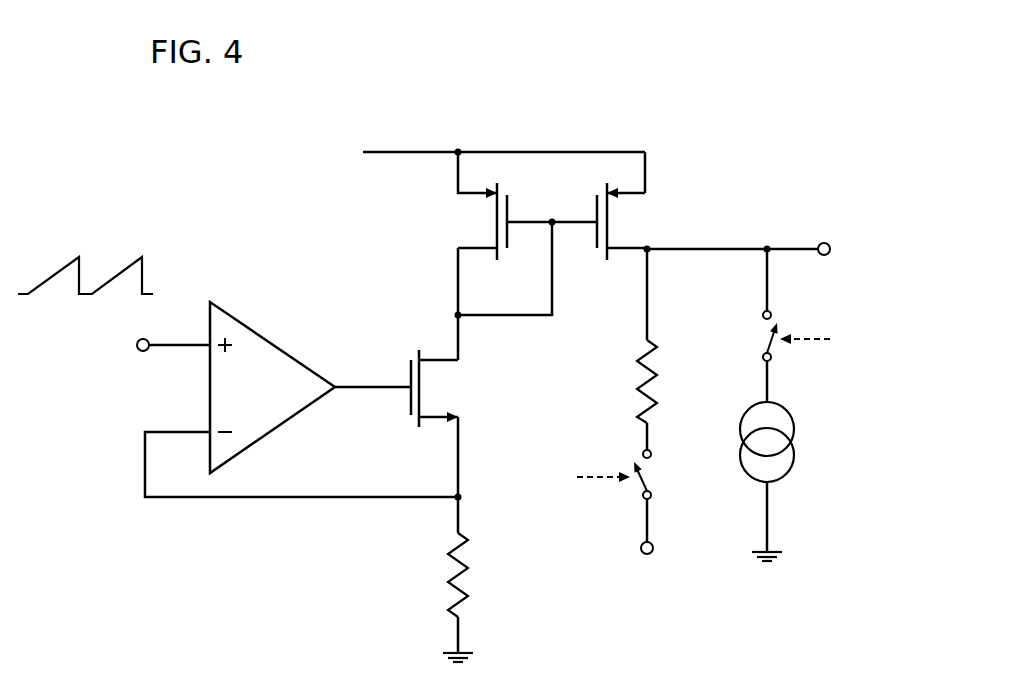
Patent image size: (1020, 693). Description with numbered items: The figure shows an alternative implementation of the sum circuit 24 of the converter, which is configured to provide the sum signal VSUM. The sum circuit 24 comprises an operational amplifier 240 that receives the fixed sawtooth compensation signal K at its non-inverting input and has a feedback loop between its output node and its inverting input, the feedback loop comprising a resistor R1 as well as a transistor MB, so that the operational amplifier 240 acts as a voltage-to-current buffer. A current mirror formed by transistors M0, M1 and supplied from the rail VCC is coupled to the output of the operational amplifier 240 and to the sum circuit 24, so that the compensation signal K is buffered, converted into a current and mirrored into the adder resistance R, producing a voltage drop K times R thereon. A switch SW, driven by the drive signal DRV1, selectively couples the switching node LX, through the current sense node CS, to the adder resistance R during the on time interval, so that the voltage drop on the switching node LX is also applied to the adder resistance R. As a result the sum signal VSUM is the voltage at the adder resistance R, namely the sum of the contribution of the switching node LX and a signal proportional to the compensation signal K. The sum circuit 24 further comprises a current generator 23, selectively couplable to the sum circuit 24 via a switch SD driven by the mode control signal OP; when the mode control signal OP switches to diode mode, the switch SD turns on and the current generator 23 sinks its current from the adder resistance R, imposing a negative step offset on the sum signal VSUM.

The sum circuit 24 is at (289, 220).
The operational amplifier 240 is at (300, 368).
The current generator 23 is at (808, 479).
The current mirror transistor M0 is at (480, 228).
The current mirror transistor M1 is at (628, 219).
The transistor MB is at (450, 395).
The adder resistance R is at (640, 392).
The resistor R1 is at (448, 577).
The switch SW is at (642, 472).
The switch SD is at (763, 332).
The compensation signal K is at (85, 263).
The supply voltage VCC is at (498, 136).
The sum signal VSUM is at (738, 238).
The drive signal DRV1 is at (597, 494).
The mode control signal OP is at (807, 328).
The current sense node CS is at (669, 520).
The switching node LX is at (646, 565).